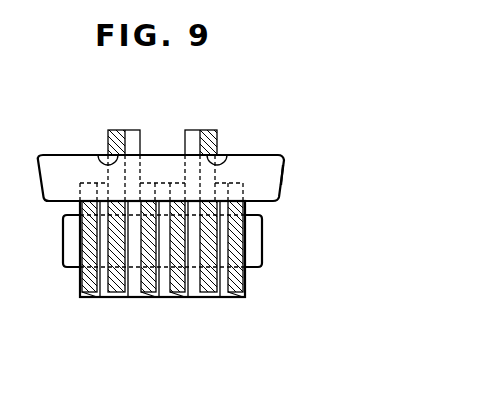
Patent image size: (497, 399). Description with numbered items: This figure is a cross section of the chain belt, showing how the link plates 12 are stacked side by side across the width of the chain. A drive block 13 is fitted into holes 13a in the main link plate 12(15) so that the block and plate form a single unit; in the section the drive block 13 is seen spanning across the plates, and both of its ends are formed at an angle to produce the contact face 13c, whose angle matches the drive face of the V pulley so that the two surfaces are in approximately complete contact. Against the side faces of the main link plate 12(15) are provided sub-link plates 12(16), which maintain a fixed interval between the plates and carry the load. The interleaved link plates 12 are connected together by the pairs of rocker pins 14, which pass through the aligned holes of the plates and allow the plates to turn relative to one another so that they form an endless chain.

The link plates 12 is at (126, 130).
The drive block 13 is at (272, 156).
The holes 13a is at (108, 164).
The contact face 13c is at (282, 177).
The rocker pins 14 is at (262, 252).
The main link plate 15 is at (178, 120).
The sub-link plates 16 is at (172, 288).